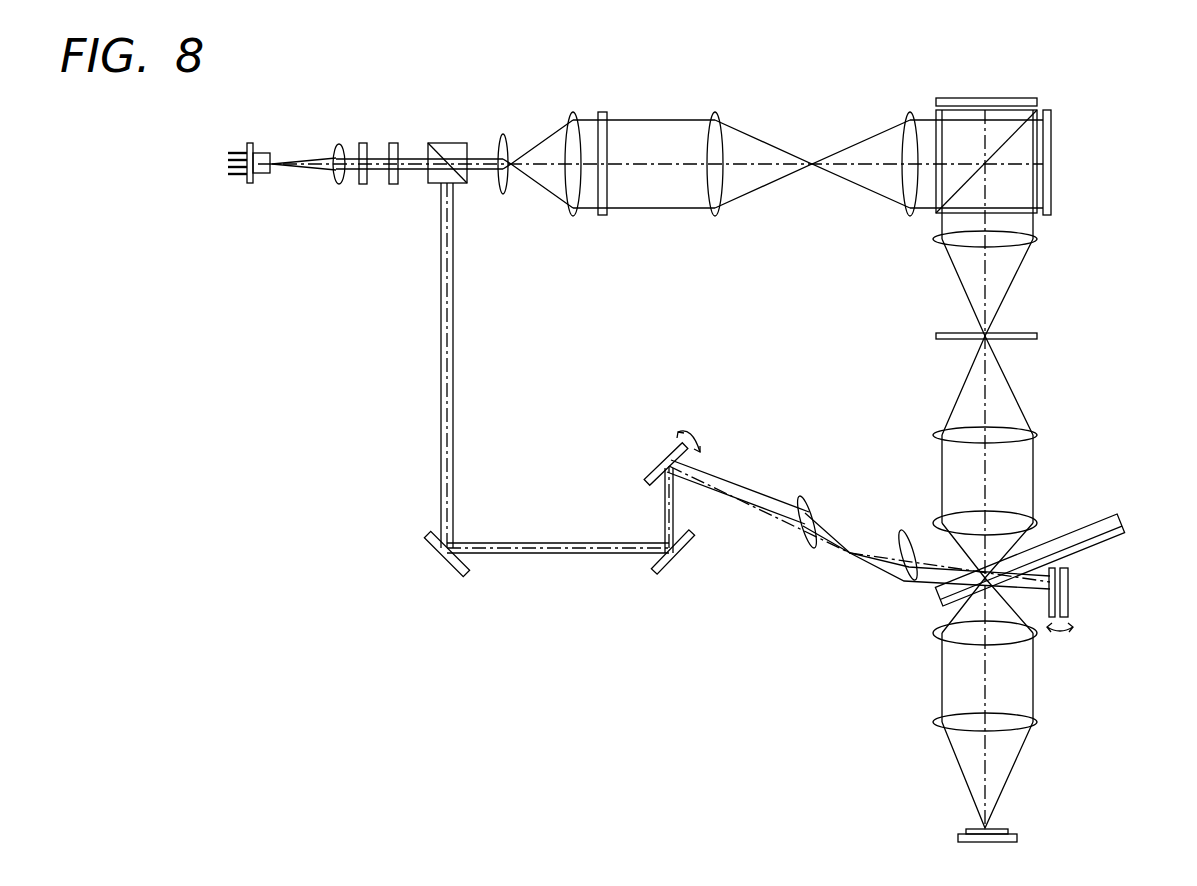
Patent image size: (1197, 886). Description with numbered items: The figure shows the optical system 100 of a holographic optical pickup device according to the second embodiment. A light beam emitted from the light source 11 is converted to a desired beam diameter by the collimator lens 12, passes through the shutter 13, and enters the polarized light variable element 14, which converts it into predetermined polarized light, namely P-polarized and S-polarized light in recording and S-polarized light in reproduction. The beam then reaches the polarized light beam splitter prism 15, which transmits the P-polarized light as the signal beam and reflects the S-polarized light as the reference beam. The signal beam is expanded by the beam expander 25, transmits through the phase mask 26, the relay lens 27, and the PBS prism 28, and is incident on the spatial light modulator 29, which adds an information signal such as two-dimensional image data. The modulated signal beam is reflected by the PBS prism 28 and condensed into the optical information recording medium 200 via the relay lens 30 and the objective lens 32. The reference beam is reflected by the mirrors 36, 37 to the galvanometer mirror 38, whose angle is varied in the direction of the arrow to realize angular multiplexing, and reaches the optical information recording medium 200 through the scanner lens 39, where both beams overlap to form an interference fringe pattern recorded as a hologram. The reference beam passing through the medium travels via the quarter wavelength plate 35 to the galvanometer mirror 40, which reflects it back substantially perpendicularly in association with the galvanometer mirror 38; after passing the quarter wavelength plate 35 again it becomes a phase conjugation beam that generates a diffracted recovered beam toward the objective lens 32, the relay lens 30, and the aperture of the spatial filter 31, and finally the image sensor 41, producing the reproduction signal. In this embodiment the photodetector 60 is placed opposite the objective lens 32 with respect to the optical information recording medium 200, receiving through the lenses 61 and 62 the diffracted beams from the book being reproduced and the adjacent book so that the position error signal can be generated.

The optical system 100 is at (147, 121).
The light source 11 is at (260, 152).
The collimator lens 12 is at (336, 145).
The shutter 13 is at (363, 143).
The polarized light variable element 14 is at (394, 143).
The polarized light beam splitter prism 15 is at (445, 145).
The beam expander 25 is at (490, 108).
The phase mask 26 is at (603, 112).
The relay lens 27 is at (915, 108).
The PBS prism 28 is at (945, 128).
The spatial light modulator 29 is at (1052, 145).
The relay lens 30 is at (933, 235).
The spatial filter 31 is at (1040, 336).
The objective lens 32 is at (1020, 522).
The quarter wavelength plate 35 is at (1050, 636).
The mirror 36 is at (430, 533).
The mirror 37 is at (680, 556).
The galvanometer mirror 38 is at (660, 462).
The scanner lens 39 is at (856, 555).
The galvanometer mirror 40 is at (1070, 590).
The image sensor 41 is at (1040, 100).
The photodetector 60 is at (958, 838).
The lens 61 is at (957, 632).
The lens 62 is at (957, 722).
The optical information recording medium 200 is at (1122, 527).